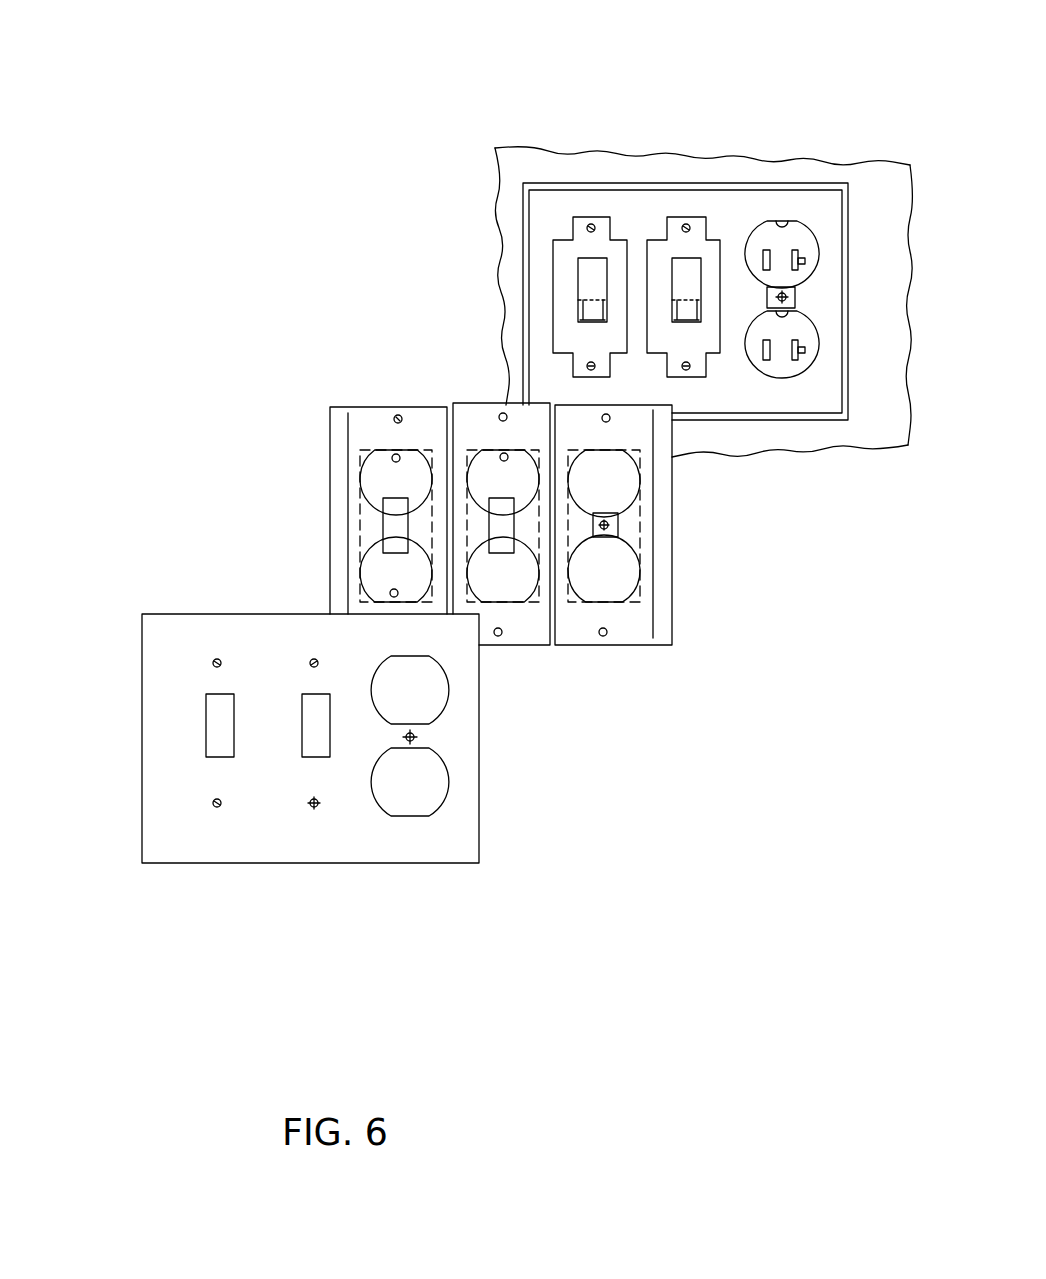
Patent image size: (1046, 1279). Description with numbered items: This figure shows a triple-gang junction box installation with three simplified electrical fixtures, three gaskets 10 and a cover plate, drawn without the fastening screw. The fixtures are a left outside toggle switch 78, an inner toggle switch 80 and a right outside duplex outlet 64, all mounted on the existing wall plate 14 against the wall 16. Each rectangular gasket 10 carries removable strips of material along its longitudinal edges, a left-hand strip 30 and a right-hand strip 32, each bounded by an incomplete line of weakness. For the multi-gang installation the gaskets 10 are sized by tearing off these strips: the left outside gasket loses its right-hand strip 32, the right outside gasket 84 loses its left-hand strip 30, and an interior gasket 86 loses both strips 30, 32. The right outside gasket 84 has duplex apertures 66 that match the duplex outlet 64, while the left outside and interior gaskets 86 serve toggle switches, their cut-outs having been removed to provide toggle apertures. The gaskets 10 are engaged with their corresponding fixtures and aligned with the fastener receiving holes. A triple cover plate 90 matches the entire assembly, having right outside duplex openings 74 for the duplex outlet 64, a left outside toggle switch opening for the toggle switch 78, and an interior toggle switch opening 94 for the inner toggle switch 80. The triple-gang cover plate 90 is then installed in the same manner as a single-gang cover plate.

The gasket 10 is at (287, 465).
The existing wall plate 14 is at (617, 237).
The wall 16 is at (788, 165).
The left-hand strip 30 is at (311, 454).
The right-hand strip 32 is at (665, 560).
The duplex outlet 64 is at (750, 235).
The duplex apertures 66 is at (620, 553).
The duplex openings 74 is at (425, 690).
The toggle switch 78 is at (583, 267).
The toggle switch 80 is at (677, 275).
The right outside gasket 84 is at (675, 563).
The interior gasket 86 is at (552, 536).
The triple cover plate 90 is at (312, 781).
The toggle switch opening 94 is at (310, 735).